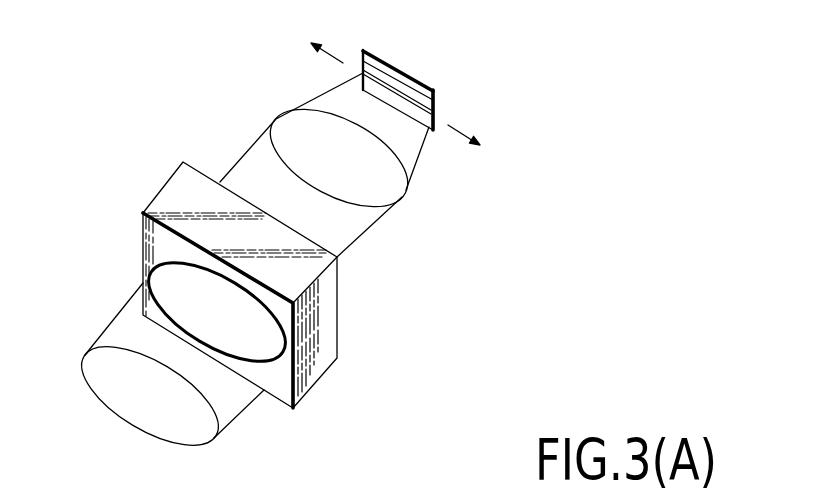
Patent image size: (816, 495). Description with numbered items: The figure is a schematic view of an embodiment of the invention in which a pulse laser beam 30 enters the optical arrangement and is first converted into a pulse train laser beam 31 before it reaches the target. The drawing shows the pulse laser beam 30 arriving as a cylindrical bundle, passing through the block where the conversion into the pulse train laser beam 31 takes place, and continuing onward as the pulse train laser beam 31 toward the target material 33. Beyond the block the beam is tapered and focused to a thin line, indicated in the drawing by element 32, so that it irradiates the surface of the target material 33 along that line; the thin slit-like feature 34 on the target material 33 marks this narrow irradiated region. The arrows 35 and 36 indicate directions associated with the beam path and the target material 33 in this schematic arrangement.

The pulse laser beam 30 is at (108, 324).
The pulse train laser beam 31 is at (236, 165).
The light guide tip portion 32 is at (311, 98).
The target material 33 is at (390, 60).
The slit 34 is at (403, 97).
The direction arrow 35 is at (309, 41).
The direction arrow 36 is at (482, 148).